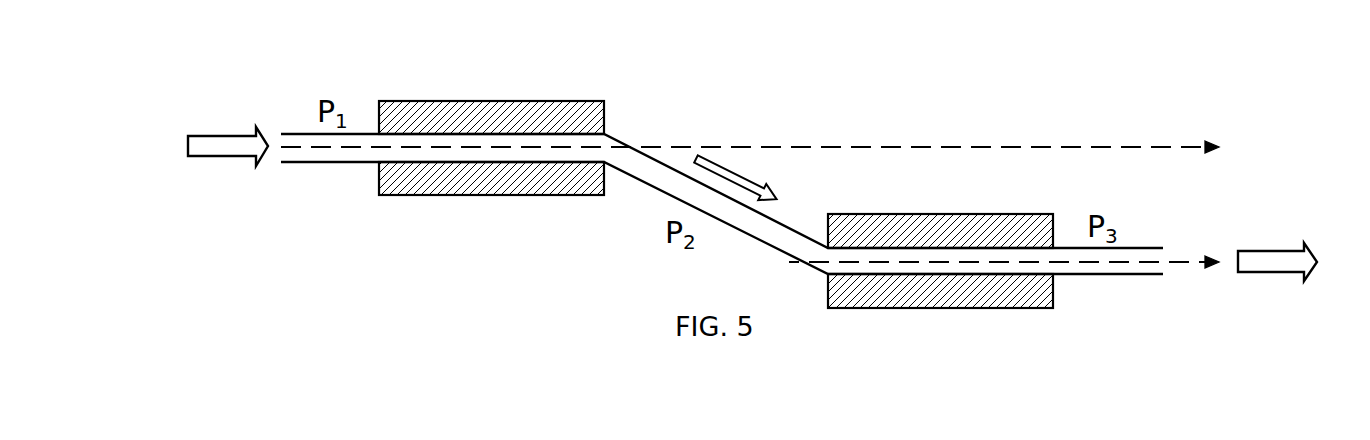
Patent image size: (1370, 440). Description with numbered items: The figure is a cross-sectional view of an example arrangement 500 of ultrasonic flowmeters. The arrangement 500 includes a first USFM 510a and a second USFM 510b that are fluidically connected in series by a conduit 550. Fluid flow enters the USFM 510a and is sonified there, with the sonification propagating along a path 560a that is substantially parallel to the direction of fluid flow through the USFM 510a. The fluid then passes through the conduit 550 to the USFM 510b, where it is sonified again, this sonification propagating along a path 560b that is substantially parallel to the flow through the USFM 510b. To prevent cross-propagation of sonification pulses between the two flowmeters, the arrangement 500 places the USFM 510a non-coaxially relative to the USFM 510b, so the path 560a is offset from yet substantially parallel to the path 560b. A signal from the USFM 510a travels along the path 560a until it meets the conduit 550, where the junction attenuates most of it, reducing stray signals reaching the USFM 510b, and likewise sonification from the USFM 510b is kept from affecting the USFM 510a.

The arrangement 500 is at (258, 56).
The USFM 510a is at (420, 101).
The USFM 510b is at (1037, 308).
The conduit 550 is at (648, 185).
The path 560a is at (978, 147).
The path 560b is at (1163, 262).